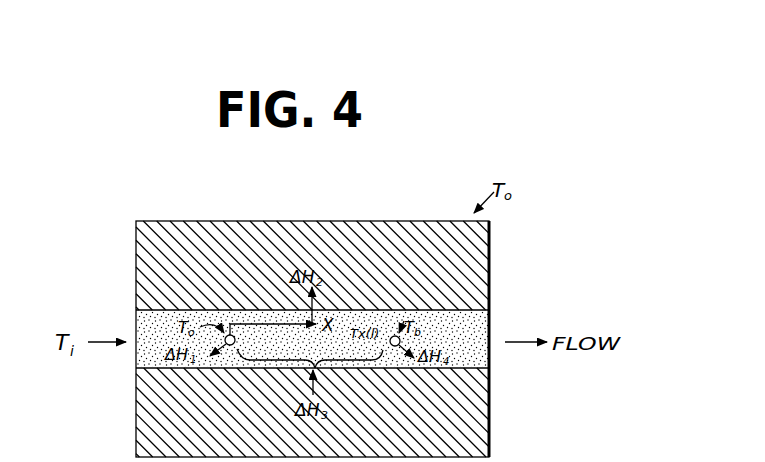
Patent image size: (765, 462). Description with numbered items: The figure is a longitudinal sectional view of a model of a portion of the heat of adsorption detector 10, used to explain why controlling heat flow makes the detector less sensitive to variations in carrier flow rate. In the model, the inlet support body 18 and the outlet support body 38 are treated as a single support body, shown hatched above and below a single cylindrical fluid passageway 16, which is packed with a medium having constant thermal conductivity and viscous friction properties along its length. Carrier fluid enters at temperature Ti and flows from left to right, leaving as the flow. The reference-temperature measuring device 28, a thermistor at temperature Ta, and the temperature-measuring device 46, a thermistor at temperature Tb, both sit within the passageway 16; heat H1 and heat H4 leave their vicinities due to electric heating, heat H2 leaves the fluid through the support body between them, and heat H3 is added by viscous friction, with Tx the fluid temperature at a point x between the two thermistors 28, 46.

The heat of adsorption detector 10 is at (340, 206).
The inlet support body 18 is at (193, 245).
The outlet support body 38 is at (418, 235).
The fluid passageway 16 is at (490, 355).
The reference-temperature measuring device 28 is at (224, 340).
The temperature-measuring device 46 is at (400, 339).